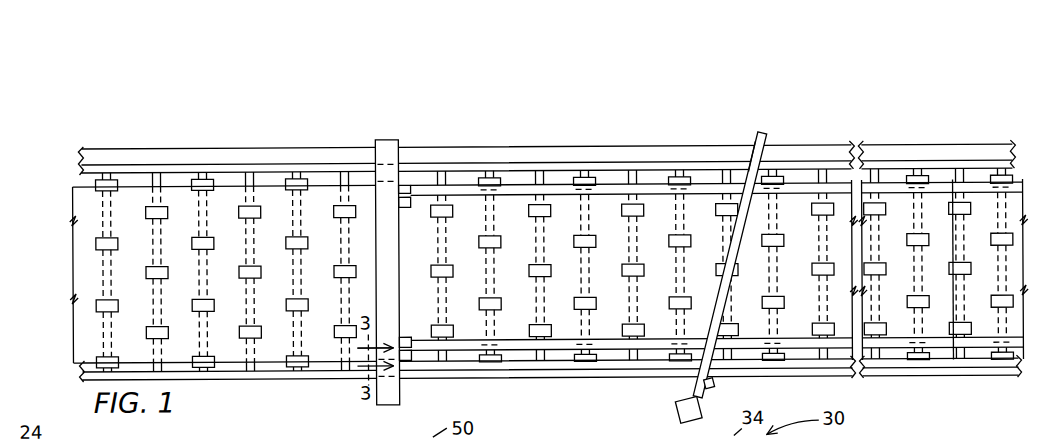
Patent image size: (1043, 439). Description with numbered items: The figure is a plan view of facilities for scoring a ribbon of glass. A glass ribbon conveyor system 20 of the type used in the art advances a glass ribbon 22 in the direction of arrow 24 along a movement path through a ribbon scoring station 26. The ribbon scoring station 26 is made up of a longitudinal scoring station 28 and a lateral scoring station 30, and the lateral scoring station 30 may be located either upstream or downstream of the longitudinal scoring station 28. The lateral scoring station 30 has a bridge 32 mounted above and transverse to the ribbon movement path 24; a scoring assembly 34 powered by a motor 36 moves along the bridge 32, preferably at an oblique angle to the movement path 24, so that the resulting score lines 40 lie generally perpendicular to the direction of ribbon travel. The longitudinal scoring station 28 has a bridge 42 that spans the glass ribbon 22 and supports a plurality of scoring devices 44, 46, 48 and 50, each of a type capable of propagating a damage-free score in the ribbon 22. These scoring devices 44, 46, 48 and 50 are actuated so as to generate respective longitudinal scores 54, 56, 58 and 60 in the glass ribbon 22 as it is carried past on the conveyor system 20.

The glass ribbon conveyor system 20 is at (626, 150).
The glass ribbon 22 is at (838, 180).
The arrow (ribbon movement path) 24 is at (95, 270).
The ribbon scoring station 26 is at (248, 146).
The longitudinal scoring station 28 is at (418, 177).
The lateral scoring station 30 is at (761, 133).
The bridge 32 is at (764, 160).
The scoring assembly 34 is at (713, 387).
The motor 36 is at (674, 417).
The score lines 40 is at (952, 197).
The bridge 42 is at (386, 406).
The scoring device 44 is at (407, 187).
The scoring device 46 is at (405, 209).
The scoring device 48 is at (405, 339).
The scoring device 50 is at (410, 362).
The longitudinal score 54 is at (520, 192).
The longitudinal score 56 is at (563, 195).
The longitudinal score 58 is at (653, 348).
The longitudinal score 60 is at (608, 355).